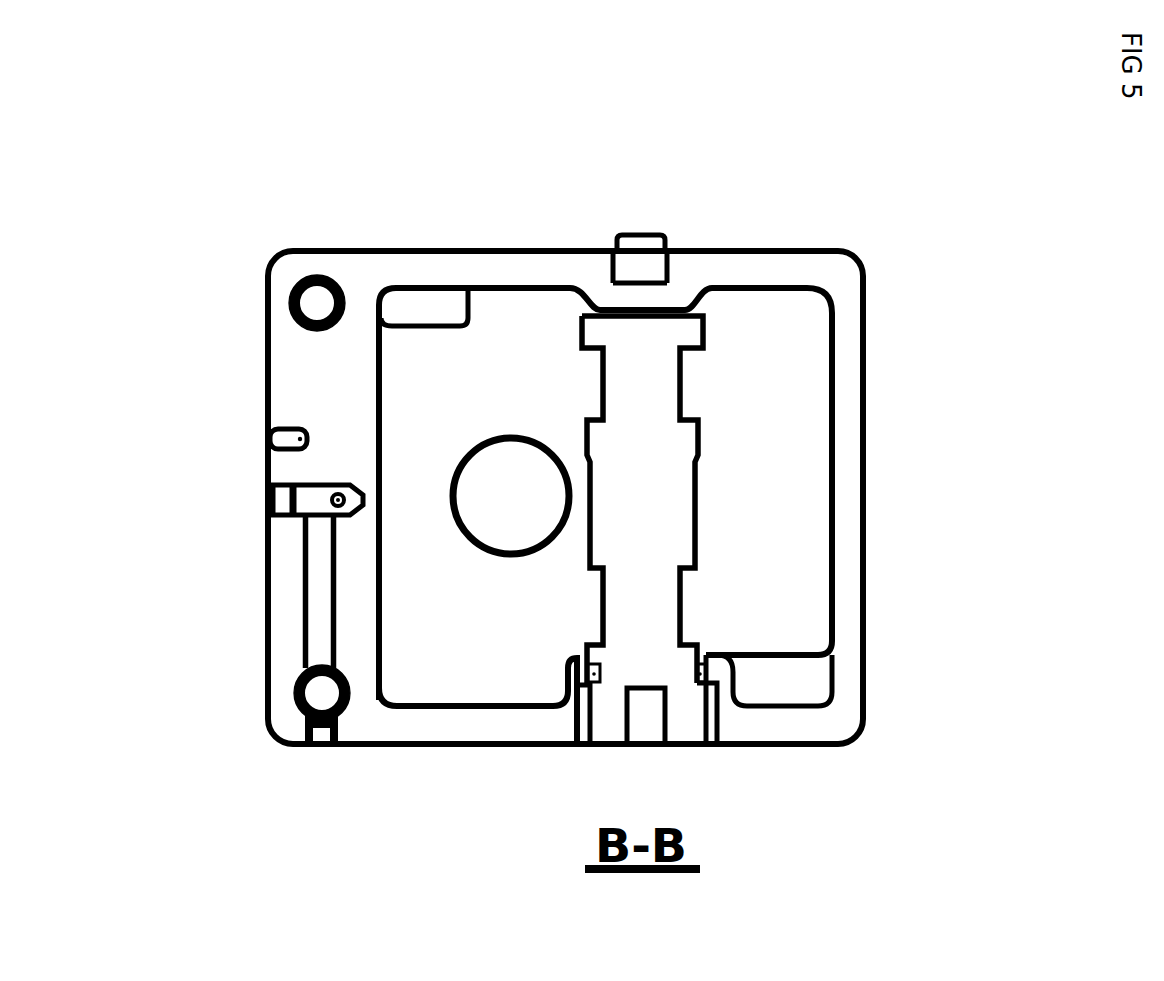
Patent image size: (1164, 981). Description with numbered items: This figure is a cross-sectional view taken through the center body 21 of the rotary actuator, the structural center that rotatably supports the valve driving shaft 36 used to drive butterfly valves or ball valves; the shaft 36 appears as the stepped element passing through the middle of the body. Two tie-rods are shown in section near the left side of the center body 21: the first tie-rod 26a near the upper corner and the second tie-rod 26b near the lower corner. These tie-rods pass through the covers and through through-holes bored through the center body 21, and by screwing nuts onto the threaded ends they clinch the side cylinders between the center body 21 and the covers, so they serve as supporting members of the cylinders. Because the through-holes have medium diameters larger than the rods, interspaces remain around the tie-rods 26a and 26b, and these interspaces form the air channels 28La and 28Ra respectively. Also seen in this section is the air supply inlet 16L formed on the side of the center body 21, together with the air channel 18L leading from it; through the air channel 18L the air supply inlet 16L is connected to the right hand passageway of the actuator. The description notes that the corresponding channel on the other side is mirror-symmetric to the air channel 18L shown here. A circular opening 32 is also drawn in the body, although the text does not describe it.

The center body 21 is at (852, 362).
The first tie-rod 26a is at (313, 305).
The air channel 28La is at (338, 278).
The air supply inlet 16L is at (305, 505).
The air channel 18L is at (320, 592).
The second tie-rod 26b is at (317, 698).
The air channel 28Ra is at (343, 702).
The circular opening 32 is at (498, 523).
The valve driving shaft 36 is at (680, 492).